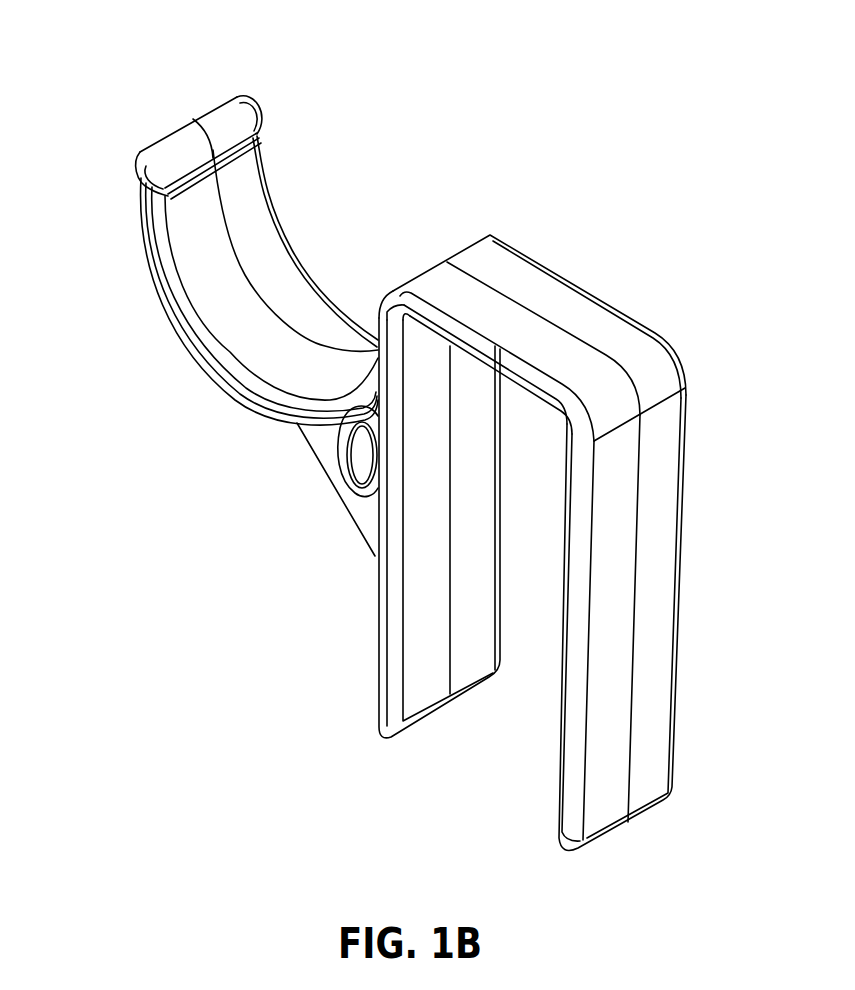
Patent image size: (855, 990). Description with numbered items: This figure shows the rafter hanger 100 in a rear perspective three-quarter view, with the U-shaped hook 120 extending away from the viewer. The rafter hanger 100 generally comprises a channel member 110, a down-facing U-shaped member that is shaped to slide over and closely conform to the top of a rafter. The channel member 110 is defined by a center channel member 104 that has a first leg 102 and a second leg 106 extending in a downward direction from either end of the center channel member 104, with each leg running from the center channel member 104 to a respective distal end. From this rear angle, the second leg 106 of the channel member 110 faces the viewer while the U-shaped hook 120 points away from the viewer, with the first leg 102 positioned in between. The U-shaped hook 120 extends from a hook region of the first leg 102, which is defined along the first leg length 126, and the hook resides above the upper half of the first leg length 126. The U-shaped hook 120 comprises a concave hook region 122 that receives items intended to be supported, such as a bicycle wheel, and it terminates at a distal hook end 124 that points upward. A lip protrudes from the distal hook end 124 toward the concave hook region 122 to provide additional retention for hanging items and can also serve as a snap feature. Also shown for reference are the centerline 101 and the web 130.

The rafter hanger 100 is at (549, 62).
The centerline 101 is at (507, 298).
The first leg 102 is at (470, 548).
The center channel member 104 is at (588, 291).
The second leg 106 is at (663, 593).
The channel member 110 is at (664, 521).
The U-shaped hook 120 is at (273, 415).
The concave hook region 122 is at (285, 293).
The distal hook end 124 is at (203, 113).
The first leg length 126 is at (262, 118).
The web 130 is at (330, 485).